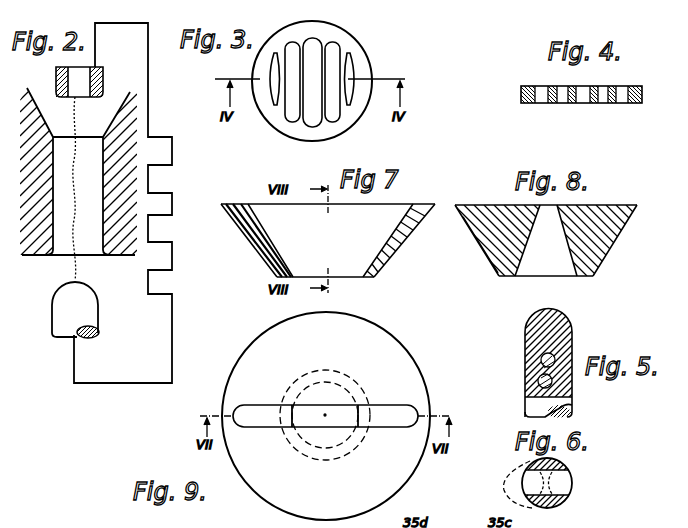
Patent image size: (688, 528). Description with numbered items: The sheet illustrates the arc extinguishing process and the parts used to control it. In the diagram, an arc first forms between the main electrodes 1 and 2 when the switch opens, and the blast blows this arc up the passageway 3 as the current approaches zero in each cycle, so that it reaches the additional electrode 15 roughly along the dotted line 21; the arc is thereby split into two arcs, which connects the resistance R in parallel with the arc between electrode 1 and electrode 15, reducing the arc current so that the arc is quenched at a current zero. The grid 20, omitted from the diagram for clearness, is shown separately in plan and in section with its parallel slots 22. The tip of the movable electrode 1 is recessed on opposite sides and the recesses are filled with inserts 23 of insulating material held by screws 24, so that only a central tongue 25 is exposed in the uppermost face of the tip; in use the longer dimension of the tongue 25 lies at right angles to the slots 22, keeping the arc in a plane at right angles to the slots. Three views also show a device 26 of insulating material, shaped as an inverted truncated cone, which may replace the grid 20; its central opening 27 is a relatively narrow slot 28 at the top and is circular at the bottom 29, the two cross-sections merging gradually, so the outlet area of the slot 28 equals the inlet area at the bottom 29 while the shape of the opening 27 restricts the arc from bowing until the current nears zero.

In FIG. 2, the main electrode 1 is at (62, 298).
In FIG. 5, the main electrode 1 is at (525, 405).
In FIG. 2, the main electrode 2 is at (48, 222).
In FIG. 2, the passageway 3 is at (67, 175).
In FIG. 2, the additional electrode 15 is at (56, 78).
In FIG. 3, the grid 20 is at (345, 45).
In FIG. 4, the grid 20 is at (638, 103).
In FIG. 2, the dotted line 21 is at (77, 196).
In FIG. 3, the parallel slots 22 is at (318, 115).
In FIG. 4, the parallel slots 22 is at (588, 84).
In FIG. 5, the inserts of insulating material 23 is at (525, 333).
In FIG. 6, the inserts of insulating material 23 is at (588, 505).
In FIG. 5, the screws 24 is at (538, 380).
In FIG. 6, the screws 24 is at (522, 484).
In FIG. 6, the central tongue 25 is at (560, 484).
In FIG. 7, the device of insulating material 26 is at (398, 240).
In FIG. 8, the device of insulating material 26 is at (605, 245).
In FIG. 9, the device of insulating material 26 is at (420, 379).
In FIG. 8, the central opening 27 is at (557, 263).
In FIG. 7, the slot 28 is at (375, 204).
In FIG. 8, the slot 28 is at (548, 208).
In FIG. 9, the slot 28 is at (405, 411).
In FIG. 7, the bottom 29 is at (352, 277).
In FIG. 8, the bottom 29 is at (540, 277).
In FIG. 9, the bottom 29 is at (350, 385).
In FIG. 2, the resistance R is at (172, 207).